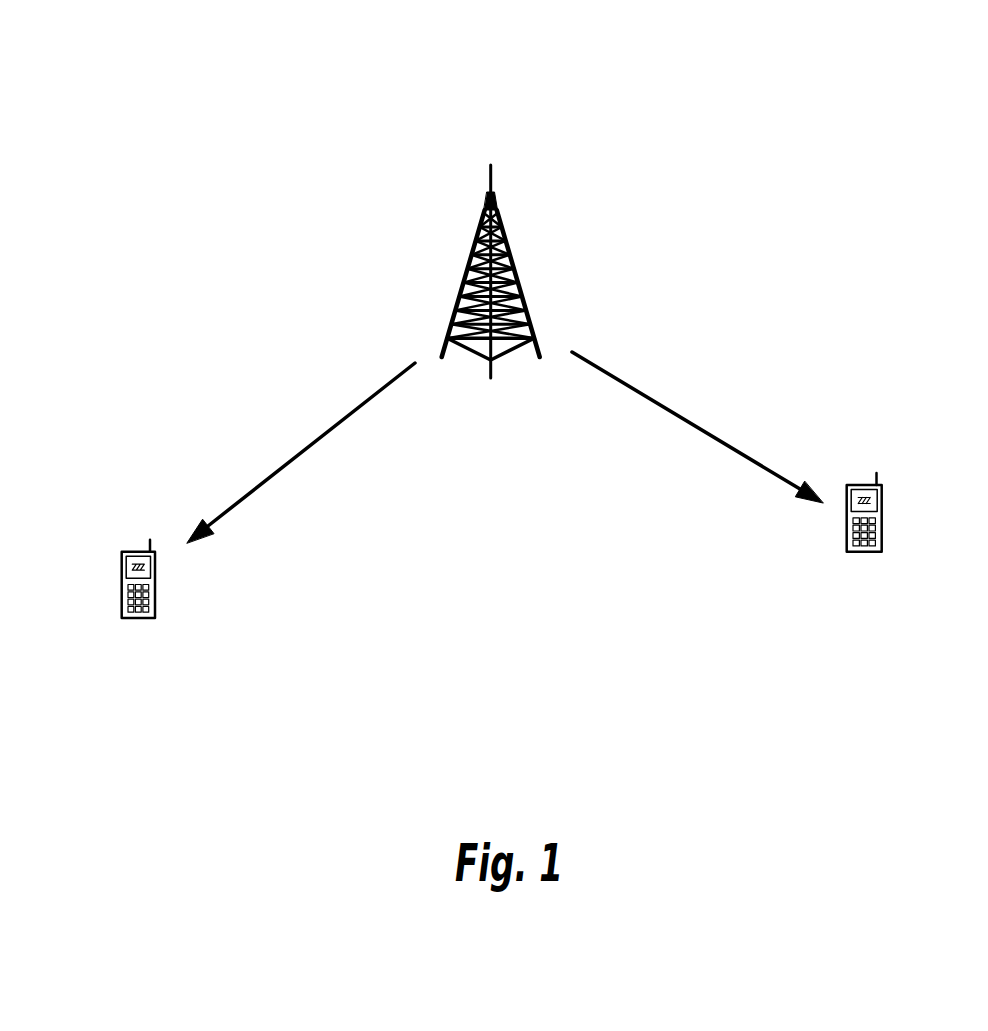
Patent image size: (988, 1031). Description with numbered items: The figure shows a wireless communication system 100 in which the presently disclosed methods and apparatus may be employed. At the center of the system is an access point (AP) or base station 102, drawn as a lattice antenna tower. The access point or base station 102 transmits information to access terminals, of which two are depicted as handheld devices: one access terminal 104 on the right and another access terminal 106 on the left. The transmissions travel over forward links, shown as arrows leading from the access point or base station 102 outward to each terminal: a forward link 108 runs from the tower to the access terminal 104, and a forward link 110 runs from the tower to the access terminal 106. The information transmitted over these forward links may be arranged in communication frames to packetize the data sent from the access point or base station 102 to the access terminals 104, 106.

The wireless communication system 100 is at (192, 108).
The access point (AP) or base station 102 is at (511, 272).
The access terminal 104 is at (846, 533).
The access terminal 106 is at (121, 598).
The forward link 108 is at (699, 429).
The forward link 110 is at (257, 487).